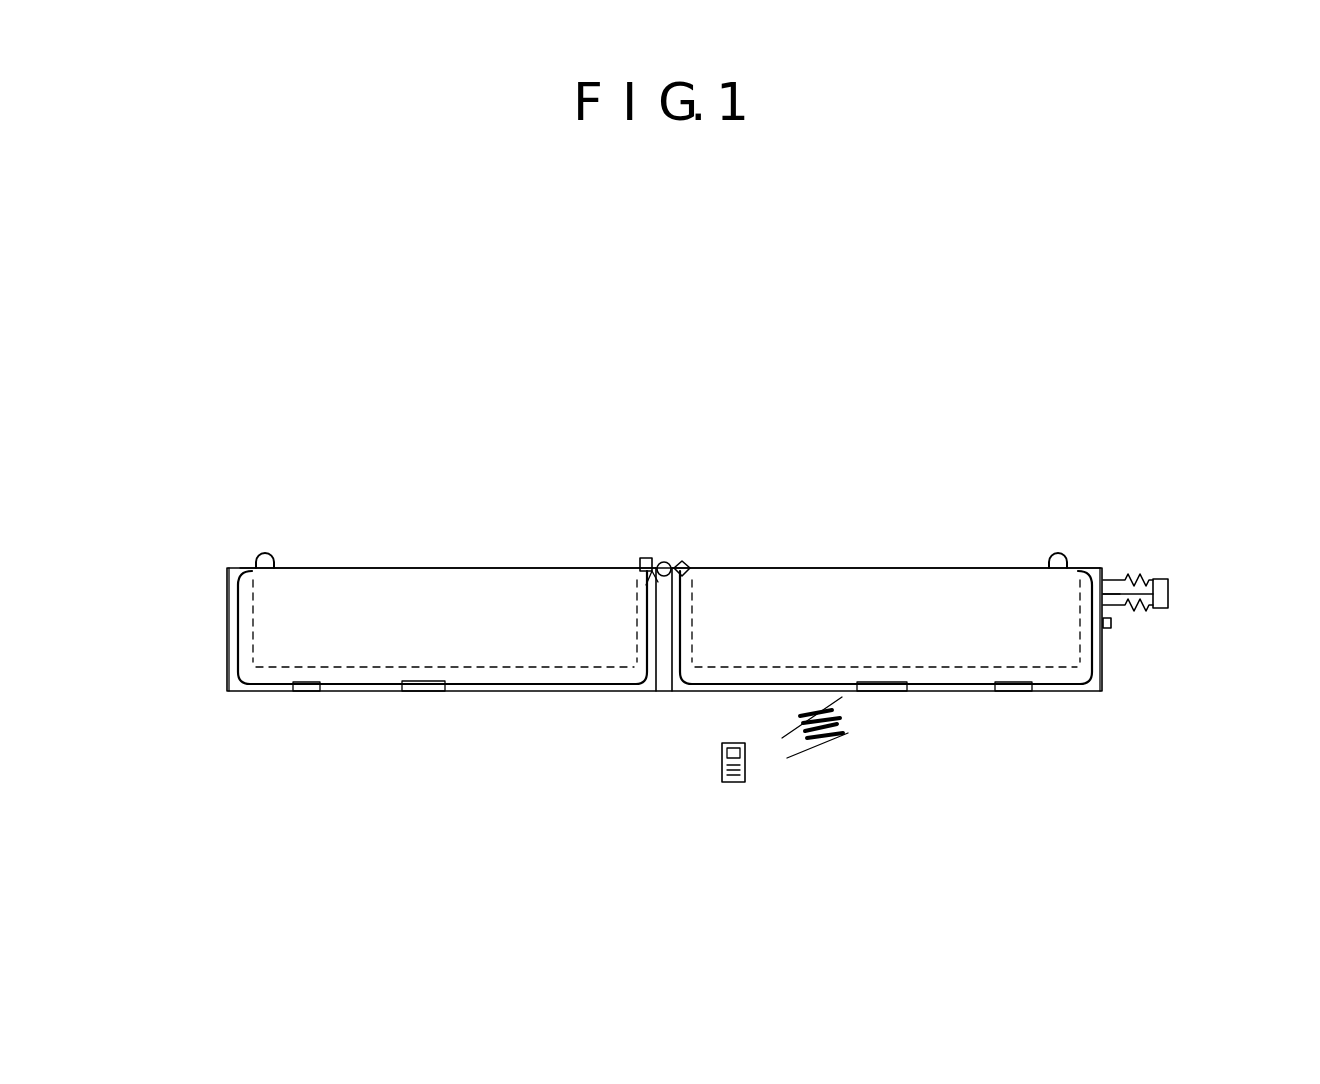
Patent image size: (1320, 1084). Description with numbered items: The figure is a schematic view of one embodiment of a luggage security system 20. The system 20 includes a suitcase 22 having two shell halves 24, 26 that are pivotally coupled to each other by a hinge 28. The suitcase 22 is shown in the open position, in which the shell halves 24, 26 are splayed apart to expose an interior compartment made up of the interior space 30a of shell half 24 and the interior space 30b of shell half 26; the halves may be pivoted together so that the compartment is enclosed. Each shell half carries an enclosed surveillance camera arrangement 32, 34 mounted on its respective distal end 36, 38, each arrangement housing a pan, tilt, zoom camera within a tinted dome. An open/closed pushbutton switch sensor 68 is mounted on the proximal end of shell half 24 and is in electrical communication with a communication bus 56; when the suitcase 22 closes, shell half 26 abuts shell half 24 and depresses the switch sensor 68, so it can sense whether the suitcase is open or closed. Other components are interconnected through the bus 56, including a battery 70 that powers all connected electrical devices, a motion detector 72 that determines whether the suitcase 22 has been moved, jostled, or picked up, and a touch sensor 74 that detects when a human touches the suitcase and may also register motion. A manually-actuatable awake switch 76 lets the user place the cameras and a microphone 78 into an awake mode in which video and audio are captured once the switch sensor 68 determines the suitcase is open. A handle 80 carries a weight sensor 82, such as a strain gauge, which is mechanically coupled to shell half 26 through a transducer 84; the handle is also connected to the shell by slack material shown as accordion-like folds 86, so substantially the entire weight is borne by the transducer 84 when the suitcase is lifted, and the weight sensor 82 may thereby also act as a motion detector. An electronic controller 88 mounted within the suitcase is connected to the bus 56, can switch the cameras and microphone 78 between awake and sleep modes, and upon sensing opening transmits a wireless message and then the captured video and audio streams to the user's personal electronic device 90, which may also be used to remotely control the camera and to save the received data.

The luggage security system 20 is at (997, 247).
The suitcase 22 is at (483, 568).
The shell half 24 is at (462, 638).
The shell half 26 is at (910, 633).
The hinge 28 is at (670, 562).
The interior space 30a is at (380, 602).
The interior space 30b is at (820, 582).
The enclosed surveillance camera arrangement 32 is at (289, 519).
The enclosed surveillance camera arrangement 34 is at (1030, 521).
The distal end 36 is at (225, 584).
The distal end 38 is at (1104, 575).
The communication bus 56 is at (238, 640).
The open/closed pushbutton switch sensor 68 is at (645, 557).
The battery 70 is at (300, 692).
The motion detector 72 is at (424, 692).
The touch sensor 74 is at (1012, 692).
The awake switch 76 is at (1112, 624).
The microphone 78 is at (684, 562).
The handle 80 is at (1177, 552).
The weight sensor 82 is at (1170, 597).
The transducer 84 is at (1116, 580).
The slack material 86 is at (1120, 607).
The electronic controller 88 is at (880, 692).
The personal electronic device 90 is at (720, 762).